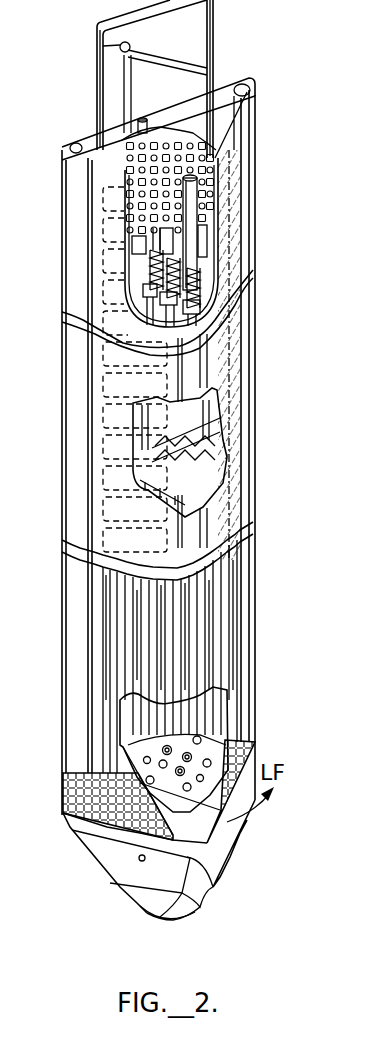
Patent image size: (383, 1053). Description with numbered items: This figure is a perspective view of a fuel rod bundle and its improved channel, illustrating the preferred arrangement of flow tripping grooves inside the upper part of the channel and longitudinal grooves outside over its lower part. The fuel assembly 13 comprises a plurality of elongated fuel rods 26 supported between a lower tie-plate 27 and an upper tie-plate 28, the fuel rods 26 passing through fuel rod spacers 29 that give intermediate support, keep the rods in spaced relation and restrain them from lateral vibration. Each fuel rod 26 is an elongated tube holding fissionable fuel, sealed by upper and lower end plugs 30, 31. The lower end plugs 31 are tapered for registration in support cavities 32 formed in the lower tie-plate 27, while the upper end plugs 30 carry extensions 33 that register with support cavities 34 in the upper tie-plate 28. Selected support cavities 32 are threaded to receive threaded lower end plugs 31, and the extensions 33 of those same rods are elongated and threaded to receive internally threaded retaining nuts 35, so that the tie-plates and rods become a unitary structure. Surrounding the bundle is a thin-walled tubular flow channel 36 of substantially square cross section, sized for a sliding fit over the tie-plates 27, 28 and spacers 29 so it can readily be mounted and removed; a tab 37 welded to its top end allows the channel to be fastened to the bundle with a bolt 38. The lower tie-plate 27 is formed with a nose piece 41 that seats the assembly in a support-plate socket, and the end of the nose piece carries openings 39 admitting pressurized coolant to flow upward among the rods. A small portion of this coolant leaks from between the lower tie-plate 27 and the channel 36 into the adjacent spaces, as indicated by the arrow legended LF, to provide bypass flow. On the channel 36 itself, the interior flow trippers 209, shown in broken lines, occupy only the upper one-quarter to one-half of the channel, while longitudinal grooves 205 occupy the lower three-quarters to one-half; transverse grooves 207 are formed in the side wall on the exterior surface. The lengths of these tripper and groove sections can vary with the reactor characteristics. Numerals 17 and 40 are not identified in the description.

The fuel assembly 13 is at (47, 399).
The lower nose piece 17 is at (160, 917).
The fuel rods 26 is at (213, 413).
The lower tie-plate 27 is at (157, 800).
The upper tie-plate 28 is at (172, 268).
The fuel rod spacers 29 is at (217, 470).
The upper end plugs 30 is at (193, 297).
The lower end plugs 31 is at (205, 738).
The support cavities 32 is at (188, 737).
The extensions 33 is at (193, 279).
The support cavities 34 is at (127, 210).
The retaining nuts 35 is at (203, 220).
The flow channel 36 is at (62, 583).
The tab 37 is at (160, 53).
The bolt 38 is at (130, 38).
The openings 39 is at (193, 905).
The transition piece 40 is at (68, 800).
The nose piece 41 is at (140, 860).
The longitudinal grooves 205 is at (100, 653).
The transverse grooves 207 is at (233, 574).
The flow trippers 209 is at (107, 358).